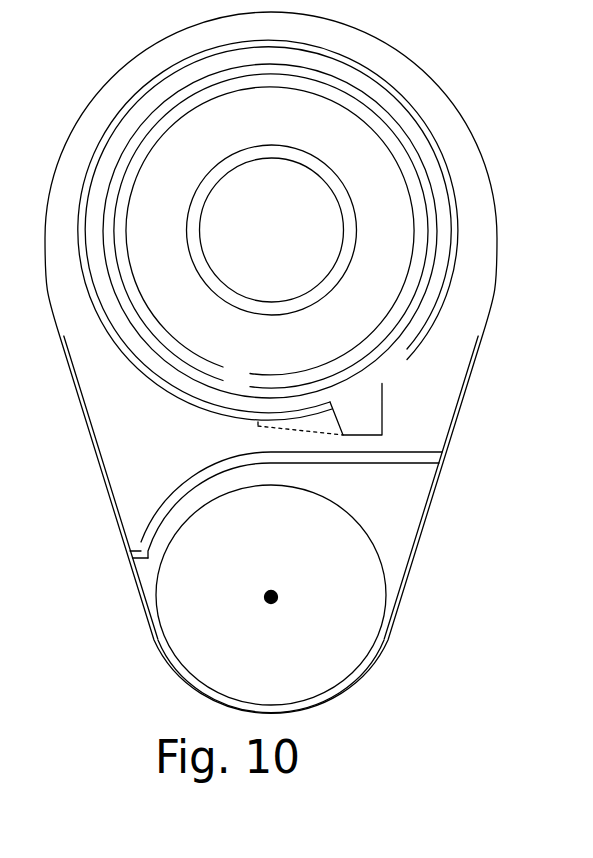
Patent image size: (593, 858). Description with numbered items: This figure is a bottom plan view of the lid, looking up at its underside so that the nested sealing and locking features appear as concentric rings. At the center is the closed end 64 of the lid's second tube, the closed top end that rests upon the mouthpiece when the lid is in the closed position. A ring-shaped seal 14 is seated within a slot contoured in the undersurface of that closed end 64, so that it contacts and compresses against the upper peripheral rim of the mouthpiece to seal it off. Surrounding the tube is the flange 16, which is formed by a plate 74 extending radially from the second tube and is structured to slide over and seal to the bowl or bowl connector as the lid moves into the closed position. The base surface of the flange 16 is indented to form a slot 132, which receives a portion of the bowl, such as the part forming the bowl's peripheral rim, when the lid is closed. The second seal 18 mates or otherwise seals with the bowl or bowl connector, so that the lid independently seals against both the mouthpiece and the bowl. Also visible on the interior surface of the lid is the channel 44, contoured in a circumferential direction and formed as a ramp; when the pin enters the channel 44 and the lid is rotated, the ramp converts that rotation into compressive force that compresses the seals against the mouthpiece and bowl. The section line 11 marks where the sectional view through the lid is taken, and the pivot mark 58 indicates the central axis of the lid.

The flange 16 is at (85, 103).
The seal 14 is at (353, 142).
The closed end 64 is at (172, 265).
The section line 11- 11 is at (375, 343).
The channel 44 is at (366, 452).
The plate 74 is at (417, 552).
The slot 132 is at (394, 564).
The seal 18 is at (343, 657).
The pivot axis 58 is at (271, 597).